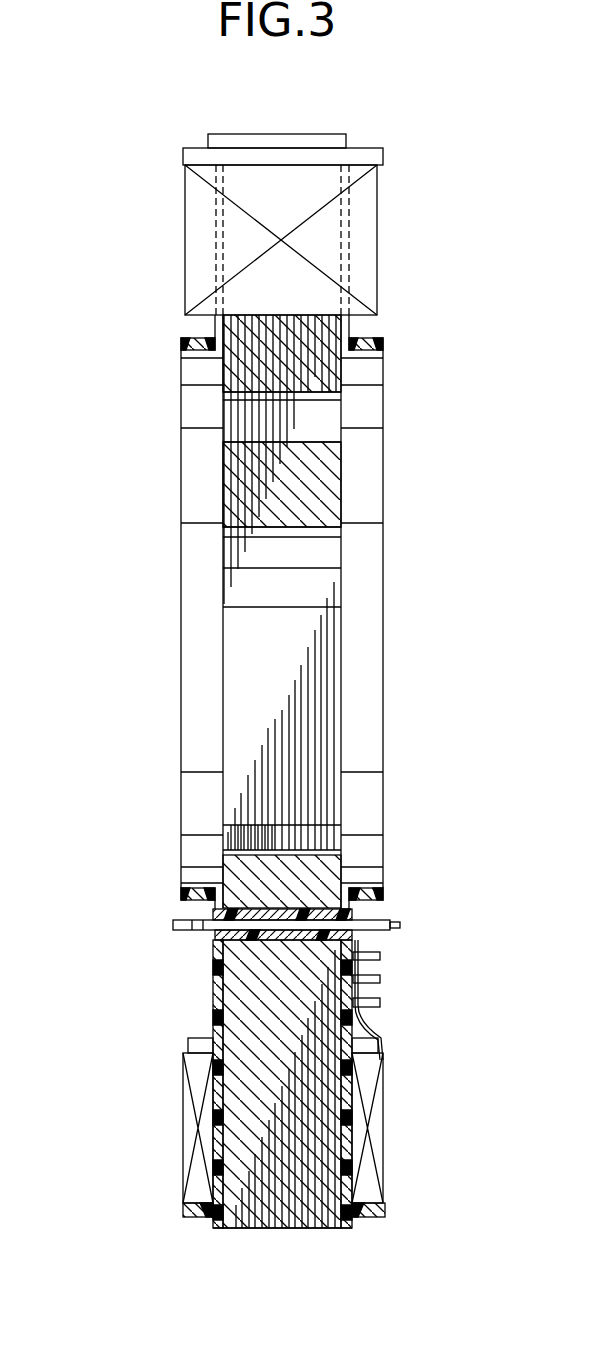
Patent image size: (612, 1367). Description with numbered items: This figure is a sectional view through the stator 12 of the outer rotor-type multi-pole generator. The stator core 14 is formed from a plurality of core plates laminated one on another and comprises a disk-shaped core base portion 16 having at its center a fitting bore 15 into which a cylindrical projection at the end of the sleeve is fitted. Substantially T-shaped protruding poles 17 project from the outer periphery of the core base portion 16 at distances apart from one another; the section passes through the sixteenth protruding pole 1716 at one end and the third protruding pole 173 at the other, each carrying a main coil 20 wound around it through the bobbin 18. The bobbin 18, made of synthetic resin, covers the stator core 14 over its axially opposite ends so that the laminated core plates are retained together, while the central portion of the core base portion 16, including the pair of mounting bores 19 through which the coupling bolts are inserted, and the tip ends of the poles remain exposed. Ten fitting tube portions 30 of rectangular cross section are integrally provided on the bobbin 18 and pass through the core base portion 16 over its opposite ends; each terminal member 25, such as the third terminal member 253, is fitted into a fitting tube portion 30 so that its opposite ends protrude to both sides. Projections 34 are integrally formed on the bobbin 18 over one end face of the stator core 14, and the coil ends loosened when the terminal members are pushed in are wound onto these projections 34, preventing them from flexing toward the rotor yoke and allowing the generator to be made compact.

The stator 12 is at (145, 1216).
The stator core 14 is at (216, 875).
The fitting bore 15 is at (302, 853).
The core base portion 16 is at (262, 862).
The protruding pole 17 is at (301, 111).
The sixteenth protruding pole 1716 is at (300, 140).
The third protruding pole 173 is at (273, 1230).
The bobbin 18 is at (376, 893).
The mounting bore 19 is at (305, 443).
The main coil 20 is at (358, 224).
The terminal member 25 is at (426, 1000).
The third terminal member 253 is at (385, 1027).
The fitting tube portion 30 is at (260, 935).
The projection 34 is at (372, 956).